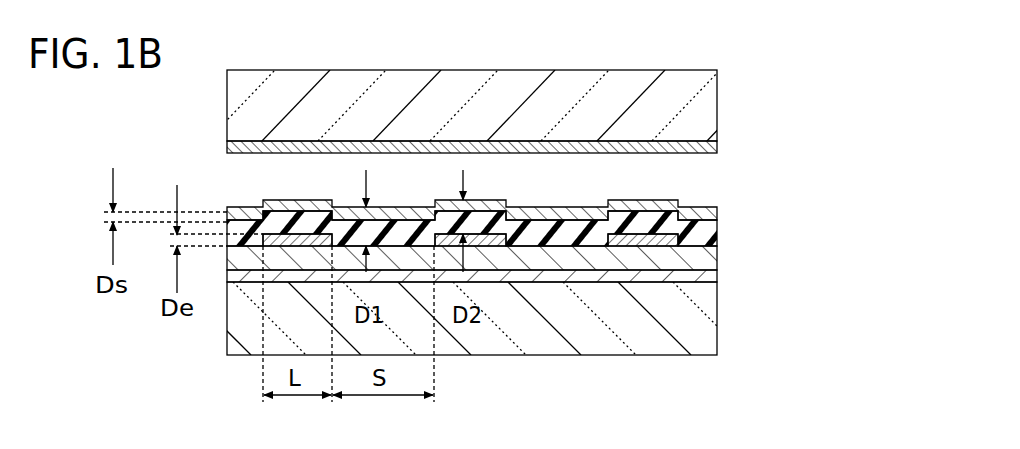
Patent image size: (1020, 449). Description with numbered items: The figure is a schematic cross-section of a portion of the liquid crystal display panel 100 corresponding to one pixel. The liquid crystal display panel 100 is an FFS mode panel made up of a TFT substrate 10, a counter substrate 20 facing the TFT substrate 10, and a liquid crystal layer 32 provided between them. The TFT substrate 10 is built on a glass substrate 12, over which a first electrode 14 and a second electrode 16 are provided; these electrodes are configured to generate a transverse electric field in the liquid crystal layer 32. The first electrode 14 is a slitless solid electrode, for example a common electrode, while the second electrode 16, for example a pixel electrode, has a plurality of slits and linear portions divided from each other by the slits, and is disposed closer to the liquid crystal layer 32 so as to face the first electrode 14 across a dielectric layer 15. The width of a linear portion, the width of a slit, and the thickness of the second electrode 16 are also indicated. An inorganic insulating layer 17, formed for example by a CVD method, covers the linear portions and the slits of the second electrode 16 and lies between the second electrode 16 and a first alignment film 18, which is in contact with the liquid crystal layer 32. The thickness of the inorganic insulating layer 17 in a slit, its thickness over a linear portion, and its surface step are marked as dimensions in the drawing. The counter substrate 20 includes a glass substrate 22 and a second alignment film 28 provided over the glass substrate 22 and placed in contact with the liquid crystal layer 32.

The liquid crystal display panel 100 is at (866, 70).
The TFT substrate 10 is at (532, 260).
The glass substrate 12 is at (717, 318).
The first electrode 14 is at (717, 275).
The dielectric layer 15 is at (717, 255).
The second electrode 16 is at (717, 237).
The inorganic insulating layer 17 is at (717, 216).
The first alignment film 18 is at (717, 205).
The counter substrate 20 is at (546, 111).
The glass substrate 22 is at (705, 116).
The second alignment film 28 is at (508, 140).
The liquid crystal layer 32 is at (539, 191).